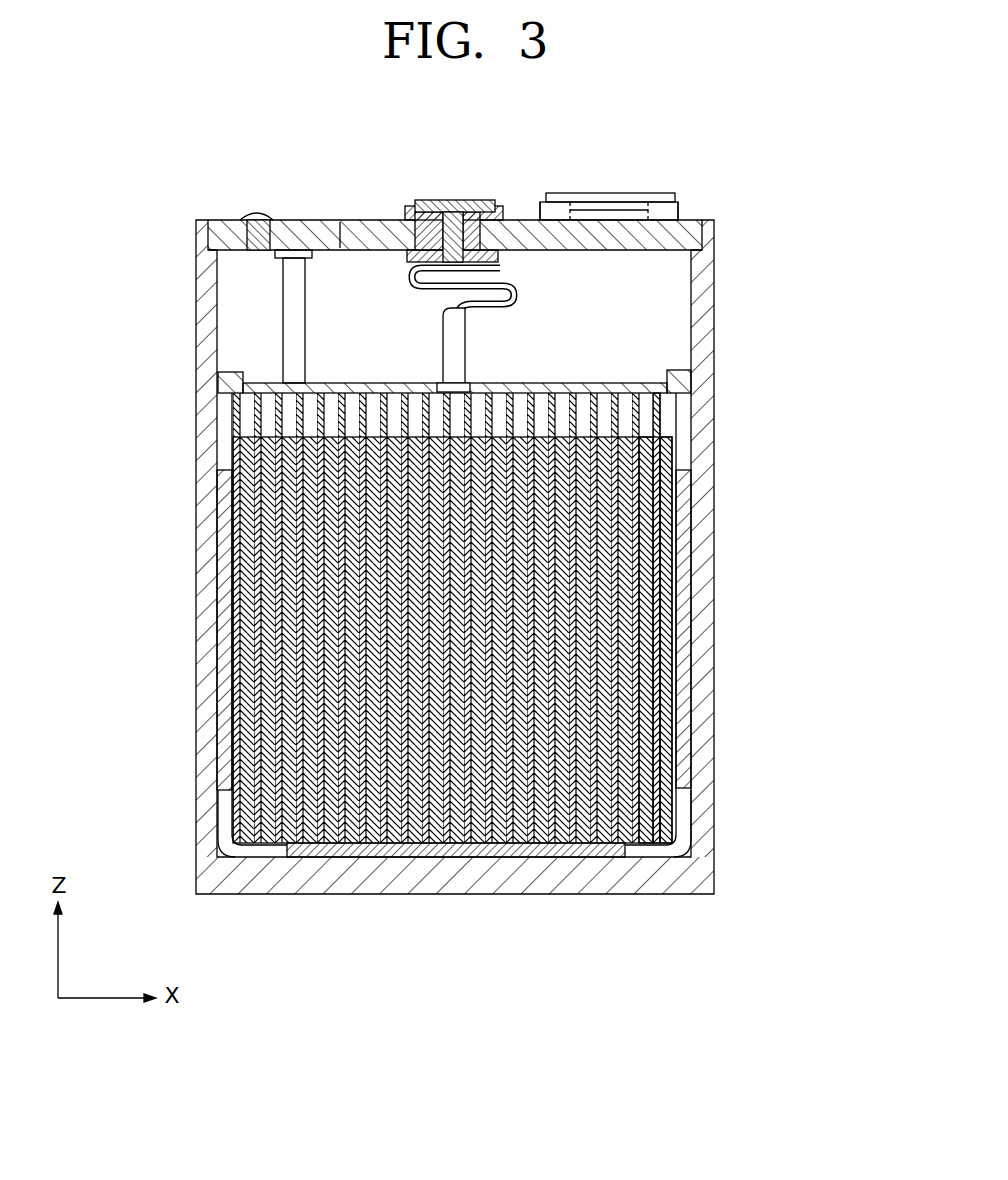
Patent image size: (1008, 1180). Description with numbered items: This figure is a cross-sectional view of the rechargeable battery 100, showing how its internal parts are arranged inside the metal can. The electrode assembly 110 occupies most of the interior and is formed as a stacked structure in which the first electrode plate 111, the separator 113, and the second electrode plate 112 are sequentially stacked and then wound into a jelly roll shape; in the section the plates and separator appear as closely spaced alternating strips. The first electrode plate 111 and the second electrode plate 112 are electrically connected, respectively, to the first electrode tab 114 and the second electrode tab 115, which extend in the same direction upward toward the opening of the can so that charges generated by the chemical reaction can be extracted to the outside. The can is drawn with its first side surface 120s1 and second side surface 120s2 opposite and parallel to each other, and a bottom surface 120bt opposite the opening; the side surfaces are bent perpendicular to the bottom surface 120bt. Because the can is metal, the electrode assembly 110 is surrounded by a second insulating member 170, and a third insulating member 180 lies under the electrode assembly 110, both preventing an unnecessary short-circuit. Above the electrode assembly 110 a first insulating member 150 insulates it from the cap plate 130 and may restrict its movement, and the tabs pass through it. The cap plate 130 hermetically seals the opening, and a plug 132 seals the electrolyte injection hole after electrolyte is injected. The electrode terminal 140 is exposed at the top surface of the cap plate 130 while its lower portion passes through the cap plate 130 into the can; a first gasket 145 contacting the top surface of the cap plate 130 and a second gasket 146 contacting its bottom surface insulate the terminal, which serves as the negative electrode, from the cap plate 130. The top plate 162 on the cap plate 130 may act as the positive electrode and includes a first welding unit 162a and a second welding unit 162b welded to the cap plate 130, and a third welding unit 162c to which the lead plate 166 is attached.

The rechargeable battery 100 is at (730, 137).
The electrode assembly 110 is at (555, 618).
The first electrode plate 111 is at (648, 490).
The second electrode plate 112 is at (660, 446).
The separator 113 is at (666, 470).
The first electrode tab 114 is at (460, 330).
The second electrode tab 115 is at (290, 314).
The first side surface 120s1 is at (207, 377).
The second side surface 120s2 is at (714, 360).
The bottom surface 120bt is at (466, 873).
The cap plate 130 is at (315, 235).
The plug 132 is at (260, 214).
The electrode terminal 140 is at (450, 203).
The first gasket 145 is at (503, 208).
The second gasket 146 is at (383, 220).
The first insulating member 150 is at (691, 388).
The top plate 162 is at (668, 161).
The first welding unit 162a is at (552, 205).
The second welding unit 162b is at (661, 181).
The third welding unit 162c is at (608, 205).
The lead plate 166 is at (668, 198).
The second insulating member 170 is at (226, 705).
The third insulating member 180 is at (353, 848).